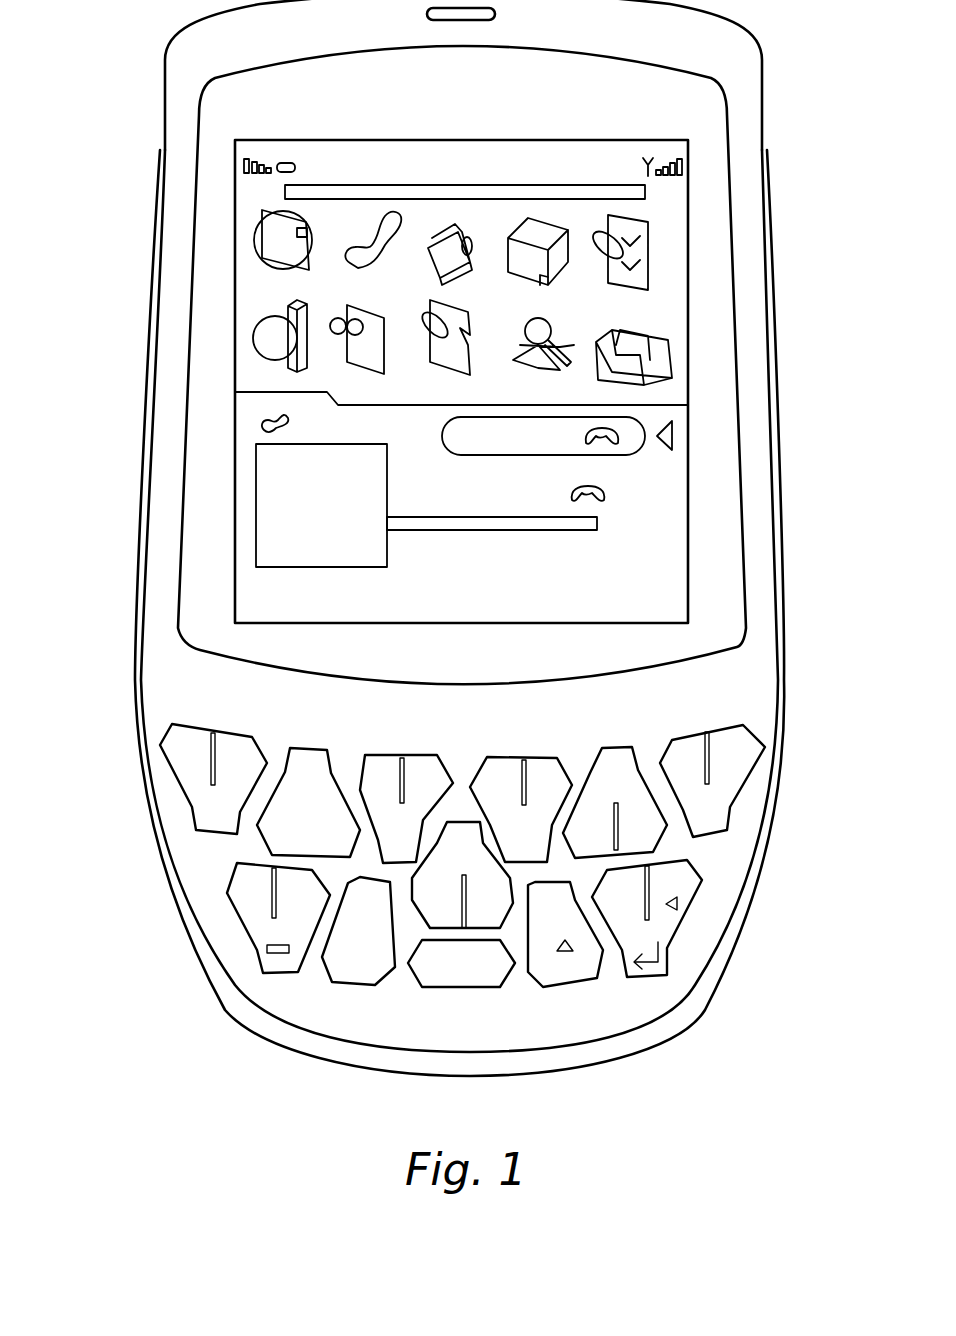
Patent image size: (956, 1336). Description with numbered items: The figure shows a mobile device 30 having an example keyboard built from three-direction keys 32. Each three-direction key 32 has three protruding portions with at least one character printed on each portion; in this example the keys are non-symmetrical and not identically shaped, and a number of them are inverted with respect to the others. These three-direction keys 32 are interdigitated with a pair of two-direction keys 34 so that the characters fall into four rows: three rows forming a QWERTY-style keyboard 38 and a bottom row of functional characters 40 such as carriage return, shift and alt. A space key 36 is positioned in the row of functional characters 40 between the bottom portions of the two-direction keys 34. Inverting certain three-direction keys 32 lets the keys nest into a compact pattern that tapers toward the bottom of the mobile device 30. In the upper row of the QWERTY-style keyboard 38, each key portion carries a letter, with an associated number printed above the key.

The mobile device 30 is at (130, 112).
The three-direction keys 32 is at (728, 790).
The two-direction keys 34 is at (358, 984).
The space key 36 is at (508, 979).
The QWERTY-style keyboard 38 is at (150, 733).
The row of functional characters 40 is at (246, 959).